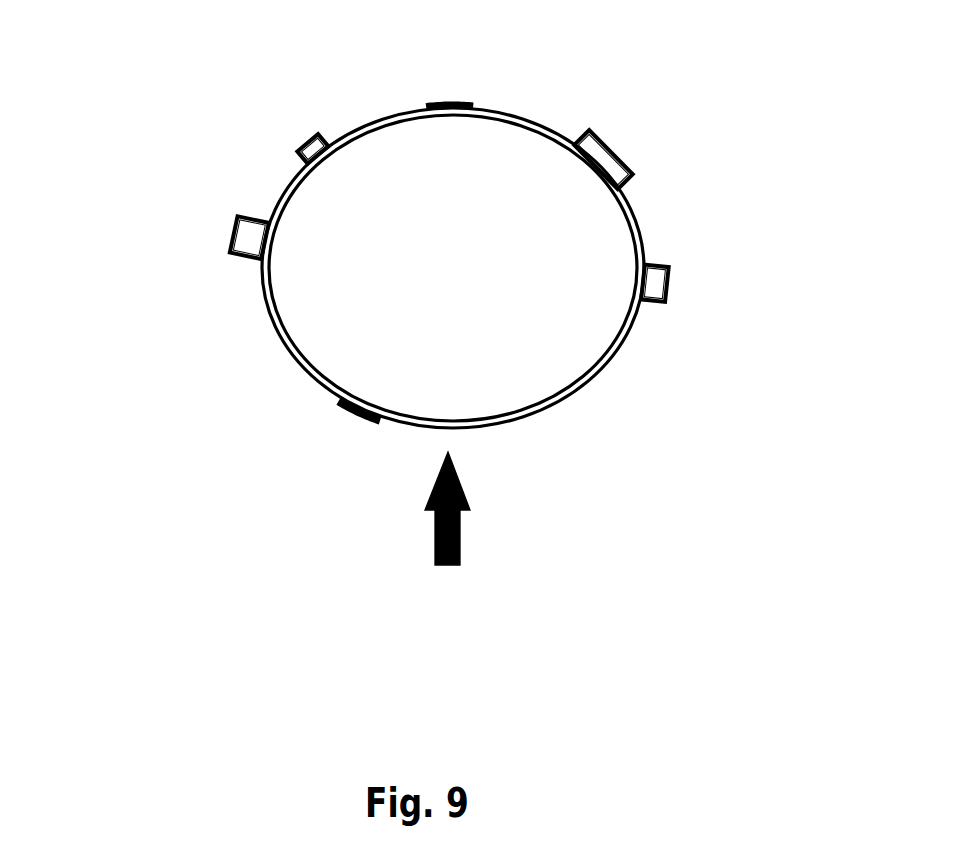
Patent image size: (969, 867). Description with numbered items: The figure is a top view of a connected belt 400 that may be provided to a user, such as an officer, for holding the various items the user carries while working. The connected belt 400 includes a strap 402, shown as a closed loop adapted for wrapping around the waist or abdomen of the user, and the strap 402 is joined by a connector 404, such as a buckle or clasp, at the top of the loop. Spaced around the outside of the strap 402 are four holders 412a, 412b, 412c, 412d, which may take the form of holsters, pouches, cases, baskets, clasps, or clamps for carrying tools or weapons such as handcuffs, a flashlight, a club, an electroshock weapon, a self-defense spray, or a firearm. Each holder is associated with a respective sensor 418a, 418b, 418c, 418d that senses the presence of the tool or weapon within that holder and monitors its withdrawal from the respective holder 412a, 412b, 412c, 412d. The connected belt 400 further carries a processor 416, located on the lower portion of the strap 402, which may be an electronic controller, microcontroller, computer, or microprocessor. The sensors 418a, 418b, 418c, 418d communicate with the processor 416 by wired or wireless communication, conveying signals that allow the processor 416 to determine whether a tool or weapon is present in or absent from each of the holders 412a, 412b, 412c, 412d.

The connected belt 400 is at (439, 552).
The strap 402 is at (535, 125).
The connector 404 is at (460, 105).
The holder 412a is at (247, 237).
The holder 412b is at (310, 142).
The holder 412c is at (620, 160).
The holder 412d is at (667, 292).
The processor 416 is at (358, 412).
The sensor 418a is at (232, 230).
The sensor 418b is at (315, 135).
The sensor 418c is at (603, 143).
The sensor 418d is at (668, 277).